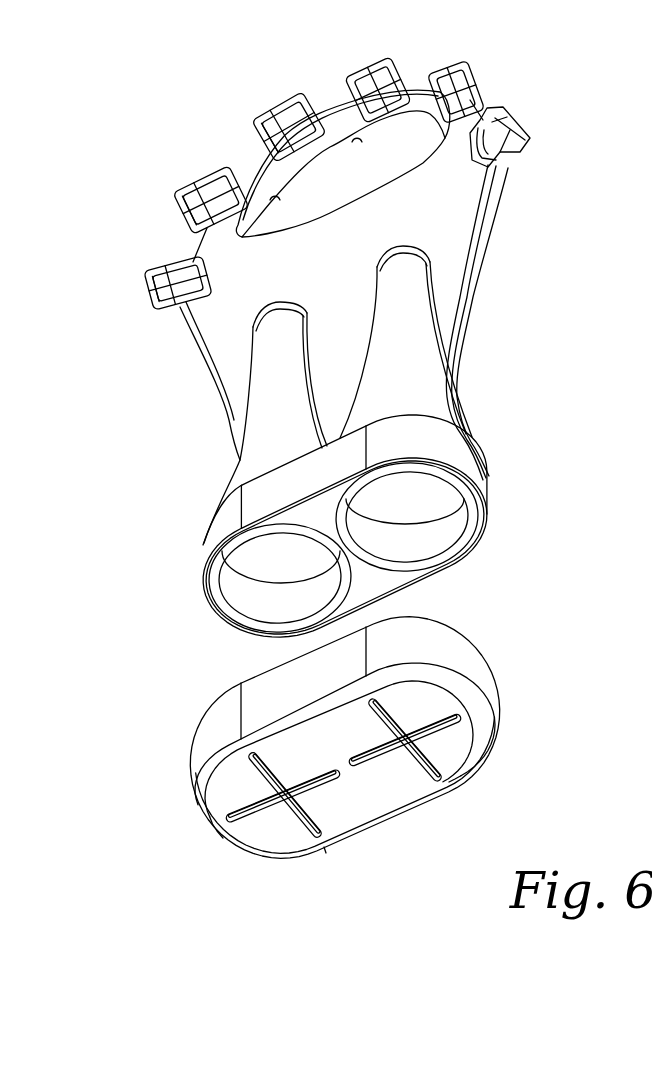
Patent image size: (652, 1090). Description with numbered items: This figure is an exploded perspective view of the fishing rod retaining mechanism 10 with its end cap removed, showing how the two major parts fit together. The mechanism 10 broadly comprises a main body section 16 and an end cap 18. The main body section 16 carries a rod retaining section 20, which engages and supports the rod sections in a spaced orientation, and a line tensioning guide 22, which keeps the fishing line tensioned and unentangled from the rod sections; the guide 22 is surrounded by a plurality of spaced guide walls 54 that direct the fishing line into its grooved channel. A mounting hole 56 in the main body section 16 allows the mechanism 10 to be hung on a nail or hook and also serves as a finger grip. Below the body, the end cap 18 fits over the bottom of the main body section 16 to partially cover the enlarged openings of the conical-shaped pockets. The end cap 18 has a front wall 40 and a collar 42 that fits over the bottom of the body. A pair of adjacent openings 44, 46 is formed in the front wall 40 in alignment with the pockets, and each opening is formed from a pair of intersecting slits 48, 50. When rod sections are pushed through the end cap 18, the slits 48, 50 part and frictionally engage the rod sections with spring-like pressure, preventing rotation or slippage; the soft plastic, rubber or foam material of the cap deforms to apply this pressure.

The fishing rod retaining mechanism 10 is at (580, 413).
The main body section 16 is at (212, 363).
The end cap 18 is at (334, 769).
The rod retaining section 20 is at (208, 546).
The line tensioning guide 22 is at (247, 104).
The front wall 40 is at (358, 812).
The collar 42 is at (198, 716).
The opening 44 is at (253, 835).
The opening 46 is at (472, 745).
The slit 48 is at (290, 817).
The slit 50 is at (418, 770).
The guide walls 54 is at (383, 72).
The mounting hole 56 is at (402, 163).